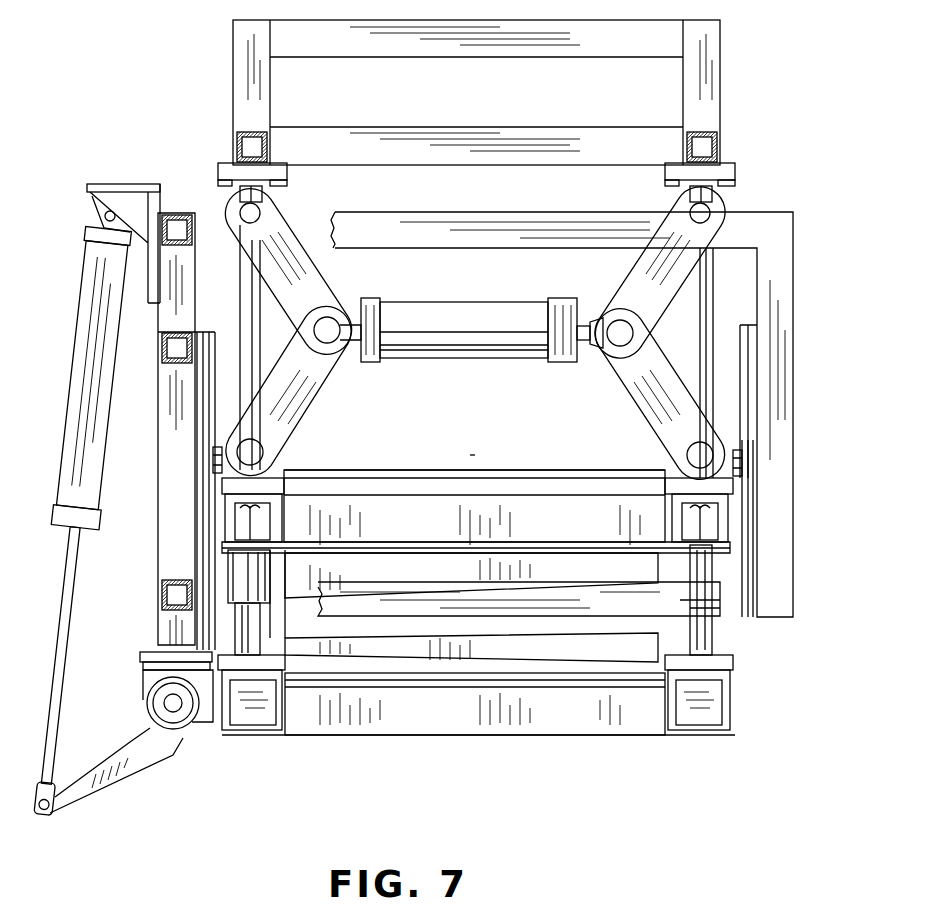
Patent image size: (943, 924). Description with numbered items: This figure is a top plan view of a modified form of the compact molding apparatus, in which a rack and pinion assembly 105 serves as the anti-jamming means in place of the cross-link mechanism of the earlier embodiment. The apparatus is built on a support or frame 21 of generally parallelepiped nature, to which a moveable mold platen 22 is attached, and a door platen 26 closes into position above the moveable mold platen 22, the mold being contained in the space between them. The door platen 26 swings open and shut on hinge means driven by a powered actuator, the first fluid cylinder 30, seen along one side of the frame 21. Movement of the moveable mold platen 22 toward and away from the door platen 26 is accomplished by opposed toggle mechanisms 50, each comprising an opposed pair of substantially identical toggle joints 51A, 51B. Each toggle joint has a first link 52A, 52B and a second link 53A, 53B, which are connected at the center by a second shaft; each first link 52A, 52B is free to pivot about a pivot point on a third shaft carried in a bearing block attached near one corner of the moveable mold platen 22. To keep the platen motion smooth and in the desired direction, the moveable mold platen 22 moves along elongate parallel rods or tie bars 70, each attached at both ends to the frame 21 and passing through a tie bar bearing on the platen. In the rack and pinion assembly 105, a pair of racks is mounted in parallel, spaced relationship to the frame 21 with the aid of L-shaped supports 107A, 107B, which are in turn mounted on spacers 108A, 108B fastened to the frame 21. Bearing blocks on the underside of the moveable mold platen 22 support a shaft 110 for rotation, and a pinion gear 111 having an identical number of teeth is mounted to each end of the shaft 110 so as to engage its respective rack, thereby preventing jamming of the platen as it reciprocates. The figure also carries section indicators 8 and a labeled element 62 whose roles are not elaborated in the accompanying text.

The frame 21 is at (768, 206).
The moveable mold platen 22 is at (530, 520).
The door platen 26 is at (415, 728).
The first fluid cylinder 30 is at (80, 372).
The toggle mechanism 50 is at (471, 299).
The toggle joint 51A is at (342, 270).
The toggle joint 51B is at (604, 272).
The first link 52A is at (305, 397).
The first link 52B is at (650, 410).
The second link 53A is at (283, 228).
The second link 53B is at (672, 207).
The cylinder body 62 is at (440, 352).
The tie bar 70 is at (247, 330).
The section line 8 is at (145, 370).
The rack and pinion assembly 105 is at (476, 446).
The L-shaped support 107A is at (205, 620).
The L-shaped support 107B is at (738, 567).
The spacer 108A is at (197, 566).
The spacer 108B is at (743, 327).
The shaft 110 is at (398, 472).
The pinion gear 111 is at (213, 441).